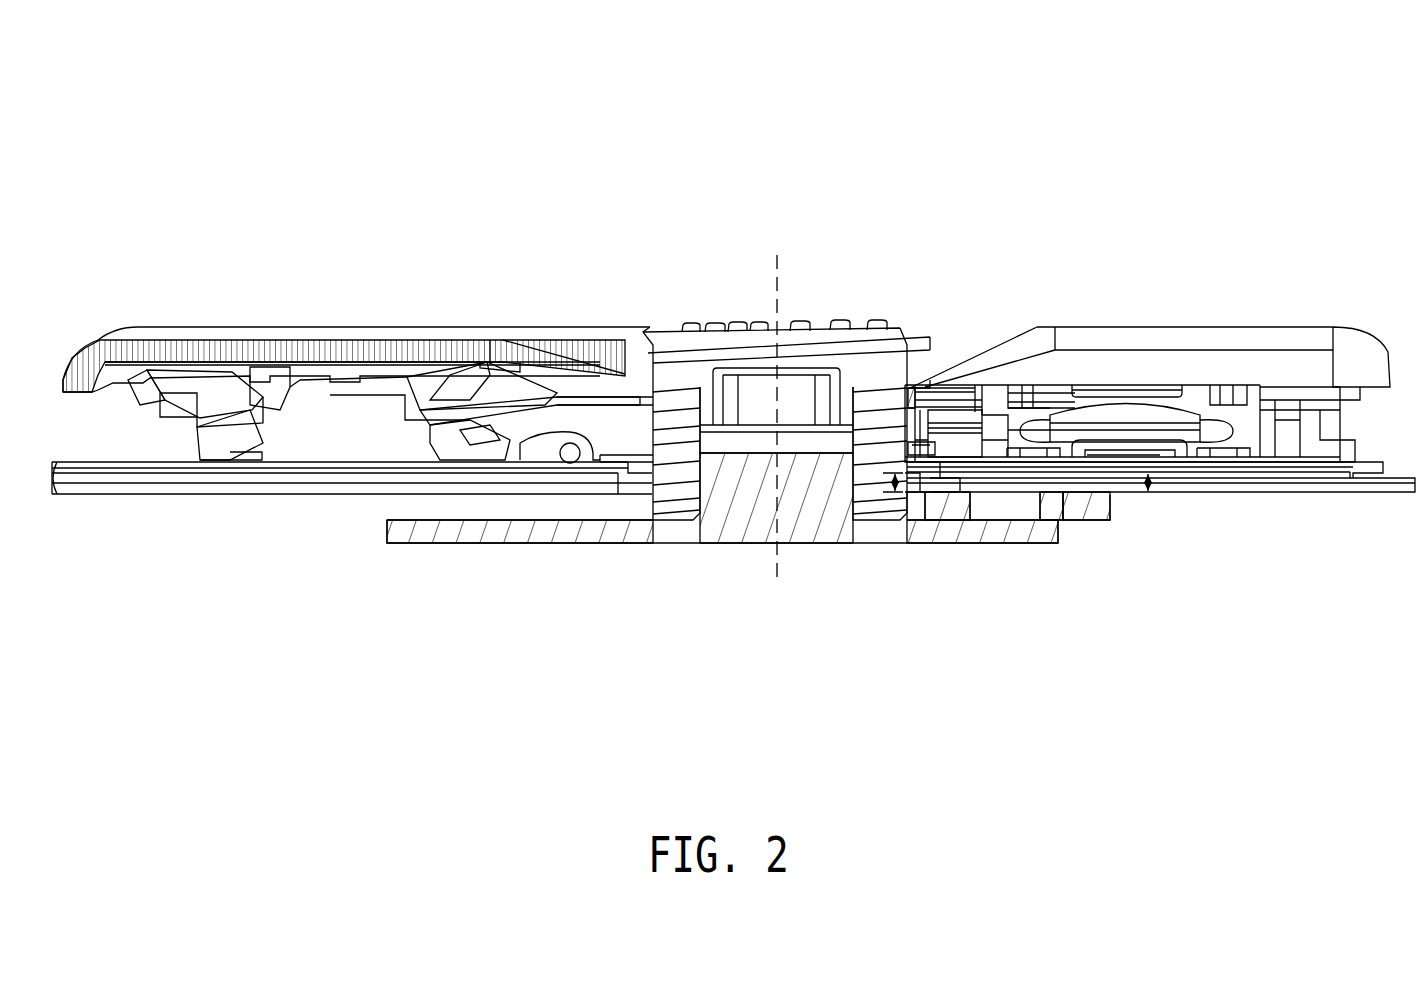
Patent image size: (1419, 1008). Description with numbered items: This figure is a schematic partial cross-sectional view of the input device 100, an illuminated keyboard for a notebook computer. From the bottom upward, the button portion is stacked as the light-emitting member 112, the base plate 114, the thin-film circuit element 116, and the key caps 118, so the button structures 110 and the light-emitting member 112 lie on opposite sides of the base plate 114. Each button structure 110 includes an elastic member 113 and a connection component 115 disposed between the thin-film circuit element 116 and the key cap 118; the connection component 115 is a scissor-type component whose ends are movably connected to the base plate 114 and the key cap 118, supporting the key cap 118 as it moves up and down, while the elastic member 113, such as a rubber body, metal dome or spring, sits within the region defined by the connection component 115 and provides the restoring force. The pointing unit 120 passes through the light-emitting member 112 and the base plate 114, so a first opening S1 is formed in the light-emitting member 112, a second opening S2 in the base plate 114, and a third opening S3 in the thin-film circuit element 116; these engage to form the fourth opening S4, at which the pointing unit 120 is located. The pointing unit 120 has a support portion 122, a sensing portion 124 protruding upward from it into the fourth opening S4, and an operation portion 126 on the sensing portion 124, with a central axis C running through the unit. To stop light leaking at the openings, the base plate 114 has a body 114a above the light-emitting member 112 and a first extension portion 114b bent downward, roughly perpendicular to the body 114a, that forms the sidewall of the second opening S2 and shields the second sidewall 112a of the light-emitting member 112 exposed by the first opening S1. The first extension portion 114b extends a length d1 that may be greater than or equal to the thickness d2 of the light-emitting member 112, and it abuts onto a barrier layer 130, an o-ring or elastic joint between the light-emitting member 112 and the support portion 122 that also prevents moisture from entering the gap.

The input device 100 is at (1180, 98).
The button structure 110 is at (520, 246).
The light-emitting member 112 is at (348, 494).
The second sidewall 112a is at (630, 482).
The elastic member 113 is at (300, 400).
The base plate 114 is at (680, 270).
The body 114a is at (583, 473).
The first extension portion 114b is at (632, 457).
The connection component 115 is at (230, 392).
The thin-film circuit element 116 is at (503, 334).
The key cap 118 is at (167, 336).
The pointing unit 120 is at (845, 688).
The support portion 122 is at (676, 537).
The sensing portion 124 is at (760, 480).
The operation portion 126 is at (865, 480).
The barrier layer 130 is at (948, 512).
The central axis C is at (779, 397).
The first opening S1 is at (944, 482).
The second opening S2 is at (910, 385).
The third opening S3 is at (915, 476).
The fourth opening S4 is at (1020, 251).
The length d1 is at (862, 497).
The thickness d2 is at (1150, 494).